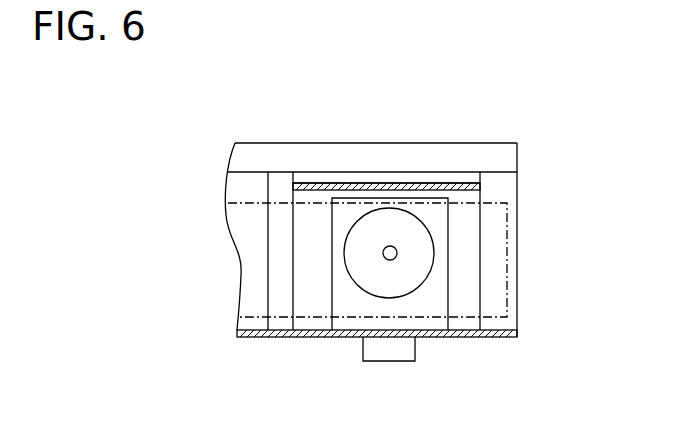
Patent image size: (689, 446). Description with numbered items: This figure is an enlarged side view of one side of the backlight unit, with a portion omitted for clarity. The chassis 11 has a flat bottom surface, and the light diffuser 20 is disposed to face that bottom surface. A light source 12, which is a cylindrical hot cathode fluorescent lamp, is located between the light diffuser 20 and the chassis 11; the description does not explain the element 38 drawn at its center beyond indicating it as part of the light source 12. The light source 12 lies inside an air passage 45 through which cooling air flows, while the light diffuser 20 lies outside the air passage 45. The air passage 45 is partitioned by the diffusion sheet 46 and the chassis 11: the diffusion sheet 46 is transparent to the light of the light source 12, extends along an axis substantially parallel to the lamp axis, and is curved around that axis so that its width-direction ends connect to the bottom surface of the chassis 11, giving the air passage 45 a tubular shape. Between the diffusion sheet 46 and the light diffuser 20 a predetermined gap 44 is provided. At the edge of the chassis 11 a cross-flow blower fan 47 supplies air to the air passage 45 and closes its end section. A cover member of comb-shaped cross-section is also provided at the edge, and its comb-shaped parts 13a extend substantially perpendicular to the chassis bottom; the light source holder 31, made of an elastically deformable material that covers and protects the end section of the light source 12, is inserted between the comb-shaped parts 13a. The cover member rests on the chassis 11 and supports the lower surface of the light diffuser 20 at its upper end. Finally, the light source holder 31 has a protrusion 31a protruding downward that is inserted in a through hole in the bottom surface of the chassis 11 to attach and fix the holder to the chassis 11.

The chassis 11 is at (467, 337).
The light source 12 is at (416, 230).
The comb-shaped part 13a is at (517, 302).
The light diffuser 20 is at (267, 153).
The light source holder 31 is at (348, 212).
The protrusion 31a is at (385, 352).
The shaft center 38 is at (390, 246).
The gap 44 is at (305, 178).
The air passage 45 is at (308, 250).
The diffusion sheet 46 is at (468, 190).
The fan 47 is at (507, 254).